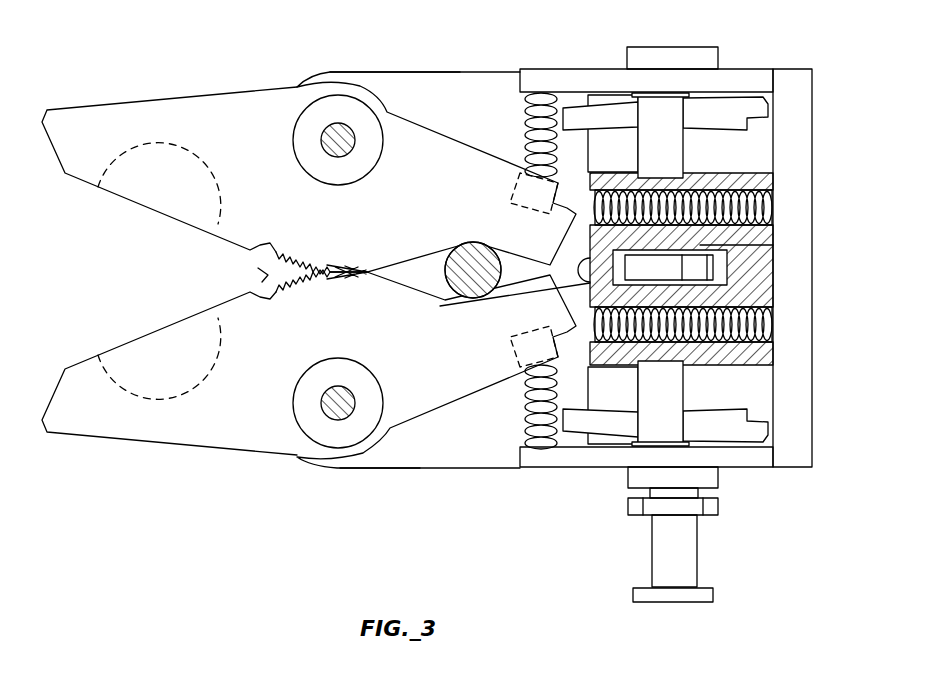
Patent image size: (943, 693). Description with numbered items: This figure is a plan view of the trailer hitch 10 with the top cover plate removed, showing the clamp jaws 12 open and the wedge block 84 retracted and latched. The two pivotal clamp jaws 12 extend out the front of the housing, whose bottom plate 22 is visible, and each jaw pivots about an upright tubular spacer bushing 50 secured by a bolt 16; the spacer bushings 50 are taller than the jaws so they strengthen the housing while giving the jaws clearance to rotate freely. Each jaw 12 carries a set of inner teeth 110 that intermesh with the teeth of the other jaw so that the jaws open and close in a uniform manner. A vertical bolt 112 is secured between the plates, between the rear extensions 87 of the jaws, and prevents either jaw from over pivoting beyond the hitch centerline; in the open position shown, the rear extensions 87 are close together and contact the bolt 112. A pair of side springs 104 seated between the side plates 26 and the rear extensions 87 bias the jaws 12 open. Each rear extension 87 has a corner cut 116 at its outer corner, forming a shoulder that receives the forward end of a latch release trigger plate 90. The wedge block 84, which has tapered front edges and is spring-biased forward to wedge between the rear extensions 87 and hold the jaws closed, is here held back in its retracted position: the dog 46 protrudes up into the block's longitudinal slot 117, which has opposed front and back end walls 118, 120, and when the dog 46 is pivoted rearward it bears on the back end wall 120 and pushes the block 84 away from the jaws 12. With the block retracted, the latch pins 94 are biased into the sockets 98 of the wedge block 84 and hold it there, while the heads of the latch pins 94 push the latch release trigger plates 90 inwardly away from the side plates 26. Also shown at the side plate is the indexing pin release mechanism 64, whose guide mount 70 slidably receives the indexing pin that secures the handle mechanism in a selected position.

The trailer hitch 10 is at (416, 48).
The clamp jaws 12 is at (113, 110).
The bolt 16 is at (337, 123).
The bottom plate 22 is at (413, 462).
The side plates 26 is at (678, 78).
The dog 46 is at (707, 240).
The spacer bushings 50 is at (305, 128).
The indexing pin release mechanism 64 is at (628, 536).
The guide mount 70 is at (692, 555).
The wedge block 84 is at (727, 270).
The rear extensions 87 is at (443, 148).
The latch release trigger plate 90 is at (605, 110).
The latch pins 94 is at (668, 152).
The sockets 98 is at (653, 177).
The side springs 104 is at (527, 128).
The inner teeth 110 is at (247, 271).
The vertical bolt 112 is at (468, 242).
The corner cut 116 is at (557, 212).
The longitudinal slot 117 is at (770, 288).
The front end wall 118 is at (475, 297).
The back end wall 120 is at (727, 267).